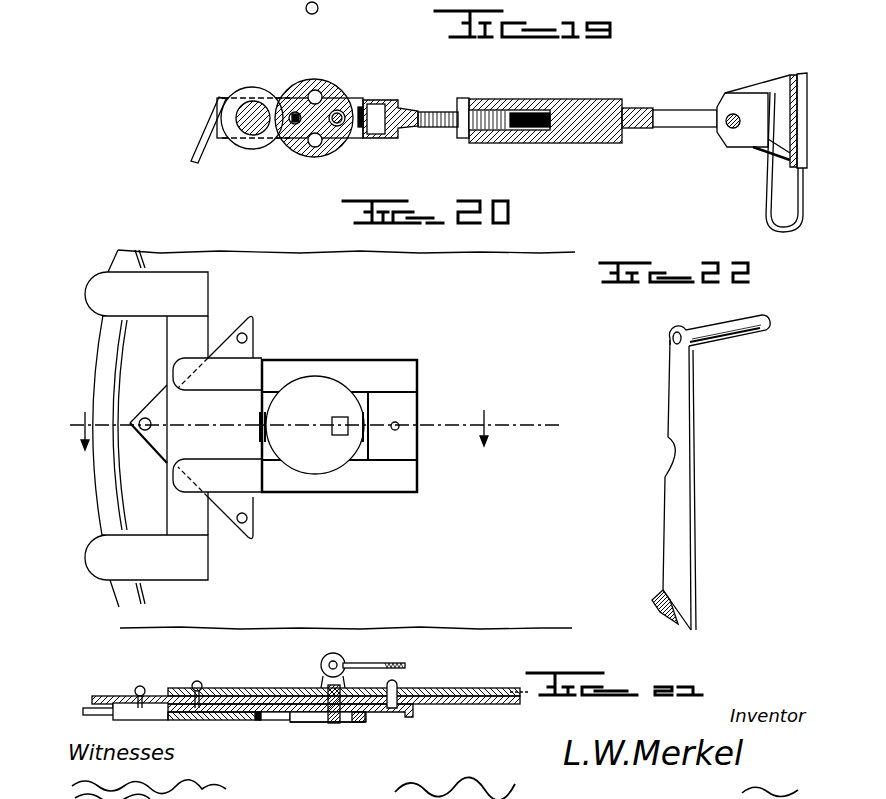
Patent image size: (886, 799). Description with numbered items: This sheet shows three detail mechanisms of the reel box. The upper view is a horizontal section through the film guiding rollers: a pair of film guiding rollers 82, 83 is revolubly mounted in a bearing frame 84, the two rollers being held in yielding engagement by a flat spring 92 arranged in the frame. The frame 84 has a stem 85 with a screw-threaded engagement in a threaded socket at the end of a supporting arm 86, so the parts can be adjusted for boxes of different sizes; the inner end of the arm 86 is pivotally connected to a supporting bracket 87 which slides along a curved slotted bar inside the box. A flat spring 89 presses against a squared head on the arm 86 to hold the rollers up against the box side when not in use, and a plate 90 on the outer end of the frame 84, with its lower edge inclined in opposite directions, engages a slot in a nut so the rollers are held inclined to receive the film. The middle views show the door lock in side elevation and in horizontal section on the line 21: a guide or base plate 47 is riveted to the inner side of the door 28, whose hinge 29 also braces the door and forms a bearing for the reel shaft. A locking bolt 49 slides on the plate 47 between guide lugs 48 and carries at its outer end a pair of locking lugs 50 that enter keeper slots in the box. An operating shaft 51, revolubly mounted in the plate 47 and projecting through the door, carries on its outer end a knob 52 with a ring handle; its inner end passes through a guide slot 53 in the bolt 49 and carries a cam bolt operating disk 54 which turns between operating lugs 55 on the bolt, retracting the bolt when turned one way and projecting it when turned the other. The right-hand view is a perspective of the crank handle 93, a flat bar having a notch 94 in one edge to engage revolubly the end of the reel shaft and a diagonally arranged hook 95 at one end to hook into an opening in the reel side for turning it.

In FIG. 20, the section line 21— 21 is at (310, 430).
In FIG. 20, the door 28 is at (207, 260).
In FIG. 21, the door 28 is at (100, 697).
In FIG. 21, the hinge 29 is at (233, 686).
In FIG. 20, the guide or base plate 47 is at (370, 372).
In FIG. 21, the guide or base plate 47 is at (405, 722).
In FIG. 20, the guide lugs 48 is at (217, 427).
In FIG. 21, the guide lugs 48 is at (200, 722).
In FIG. 20, the locking bolt 49 is at (213, 448).
In FIG. 21, the locking bolt 49 is at (238, 722).
In FIG. 20, the locking lugs 50 is at (146, 426).
In FIG. 21, the locking lugs 50 is at (88, 710).
In FIG. 20, the operating shaft 51 is at (340, 434).
In FIG. 21, the operating shaft 51 is at (330, 724).
In FIG. 21, the knob 52 is at (340, 655).
In FIG. 21, the guide slot 53 is at (272, 724).
In FIG. 20, the cam bolt operating disk 54 is at (303, 388).
In FIG. 21, the cam bolt operating disk 54 is at (300, 728).
In FIG. 20, the operating lugs 55 is at (258, 420).
In FIG. 21, the operating lugs 55 is at (262, 726).
In FIG. 19, the film guiding roller 82 is at (258, 104).
In FIG. 19, the film guiding roller 83 is at (312, 83).
In FIG. 19, the bearing frame 84 is at (368, 104).
In FIG. 19, the stem 85 is at (443, 105).
In FIG. 19, the supporting arm 86 is at (586, 101).
In FIG. 19, the supporting bracket 87 is at (788, 76).
In FIG. 19, the flat spring 89 is at (768, 197).
In FIG. 19, the plate 90 is at (206, 130).
In FIG. 19, the flat spring 92 is at (381, 130).
In FIG. 22, the crank handle 93 is at (690, 498).
In FIG. 22, the notch 94 is at (666, 465).
In FIG. 22, the hook 95 is at (662, 614).